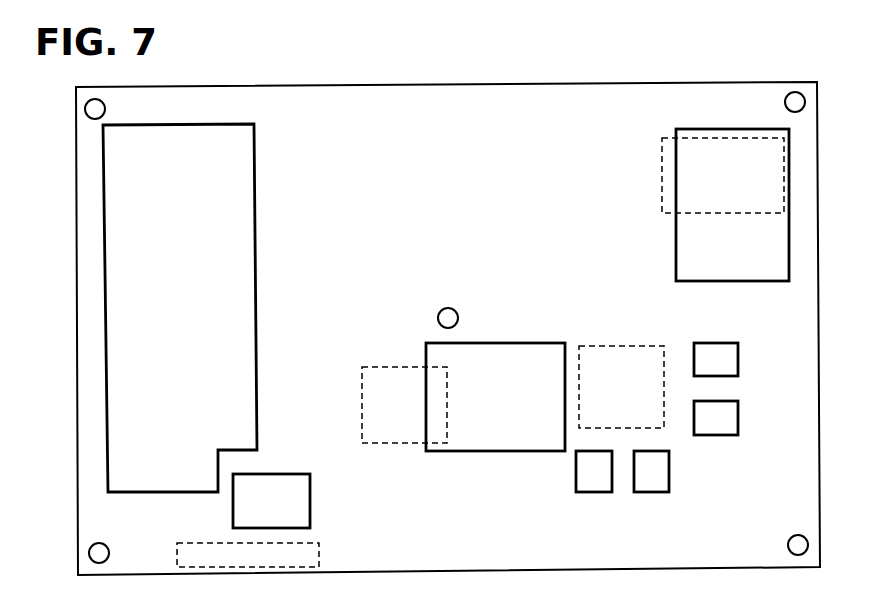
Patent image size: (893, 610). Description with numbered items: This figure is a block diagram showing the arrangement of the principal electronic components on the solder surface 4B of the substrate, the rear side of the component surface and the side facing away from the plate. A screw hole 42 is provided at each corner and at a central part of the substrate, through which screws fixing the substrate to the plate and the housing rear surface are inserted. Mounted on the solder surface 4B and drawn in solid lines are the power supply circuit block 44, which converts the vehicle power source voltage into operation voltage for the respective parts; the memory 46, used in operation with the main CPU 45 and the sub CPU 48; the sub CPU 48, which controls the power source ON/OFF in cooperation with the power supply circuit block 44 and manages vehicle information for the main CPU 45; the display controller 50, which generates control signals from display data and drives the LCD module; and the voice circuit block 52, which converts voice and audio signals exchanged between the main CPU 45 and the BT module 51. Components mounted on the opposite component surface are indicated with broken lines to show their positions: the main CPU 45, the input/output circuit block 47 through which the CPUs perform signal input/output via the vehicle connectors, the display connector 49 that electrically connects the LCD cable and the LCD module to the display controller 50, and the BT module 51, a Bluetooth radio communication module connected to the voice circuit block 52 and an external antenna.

The solder surface 4B is at (330, 108).
The screw hole 42 is at (85, 109).
The power supply circuit block 44 is at (256, 200).
The main CPU 45 is at (621, 360).
The memory 46 is at (705, 372).
The input/output circuit block 47 is at (404, 369).
The sub CPU 48 is at (516, 343).
The display connector 49 is at (226, 544).
The display controller 50 is at (295, 474).
The BT module 51 is at (697, 175).
The voice circuit block 52 is at (790, 232).